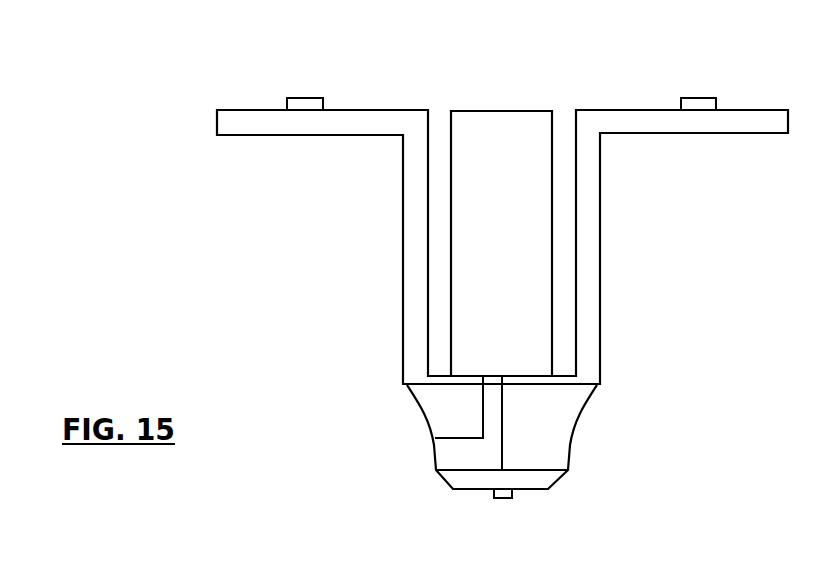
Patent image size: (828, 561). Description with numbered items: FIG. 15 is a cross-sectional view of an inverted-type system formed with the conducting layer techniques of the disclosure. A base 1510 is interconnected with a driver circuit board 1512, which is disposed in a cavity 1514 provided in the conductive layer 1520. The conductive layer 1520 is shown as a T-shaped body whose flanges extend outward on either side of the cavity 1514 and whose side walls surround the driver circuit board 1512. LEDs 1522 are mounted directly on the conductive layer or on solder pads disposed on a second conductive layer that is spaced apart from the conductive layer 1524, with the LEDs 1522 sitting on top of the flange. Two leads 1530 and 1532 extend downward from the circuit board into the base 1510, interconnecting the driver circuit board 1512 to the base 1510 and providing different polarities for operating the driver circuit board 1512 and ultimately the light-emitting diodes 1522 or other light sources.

The base 1510 is at (570, 440).
The driver circuit board 1512 is at (470, 258).
The cavity 1514 is at (566, 225).
The conductive layer 1520 is at (592, 170).
The LEDs 1522 is at (305, 98).
The conductive layer 1524 is at (223, 121).
The lead 1530 is at (482, 418).
The lead 1532 is at (503, 403).